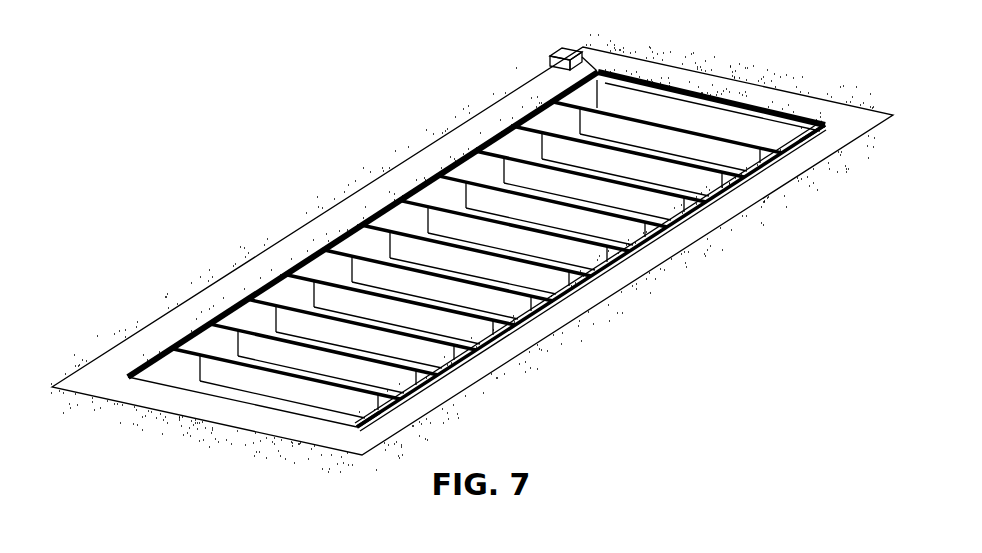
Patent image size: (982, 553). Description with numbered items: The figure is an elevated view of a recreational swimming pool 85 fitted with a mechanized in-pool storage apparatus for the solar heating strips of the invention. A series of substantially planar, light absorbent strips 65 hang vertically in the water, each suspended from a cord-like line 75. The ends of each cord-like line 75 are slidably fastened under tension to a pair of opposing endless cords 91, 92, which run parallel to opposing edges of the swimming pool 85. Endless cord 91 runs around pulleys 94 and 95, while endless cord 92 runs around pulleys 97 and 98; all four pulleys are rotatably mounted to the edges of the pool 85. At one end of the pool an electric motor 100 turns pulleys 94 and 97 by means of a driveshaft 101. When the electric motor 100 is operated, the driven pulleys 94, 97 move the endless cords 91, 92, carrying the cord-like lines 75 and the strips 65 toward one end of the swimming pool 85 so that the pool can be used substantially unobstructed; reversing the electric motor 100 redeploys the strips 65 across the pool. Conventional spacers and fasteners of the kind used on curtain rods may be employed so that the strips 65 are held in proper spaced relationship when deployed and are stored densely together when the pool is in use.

The substantially planar, light absorbent strip 65 is at (740, 212).
The cord-like line 75 is at (528, 120).
The recreational swimming pool 85 is at (770, 117).
The endless cord 91 is at (326, 240).
The endless cord 92 is at (628, 259).
The pulley 94 is at (600, 72).
The pulley 95 is at (128, 370).
The pulley 97 is at (826, 130).
The pulley 98 is at (364, 427).
The electric motor 100 is at (552, 48).
The driveshaft 101 is at (590, 70).